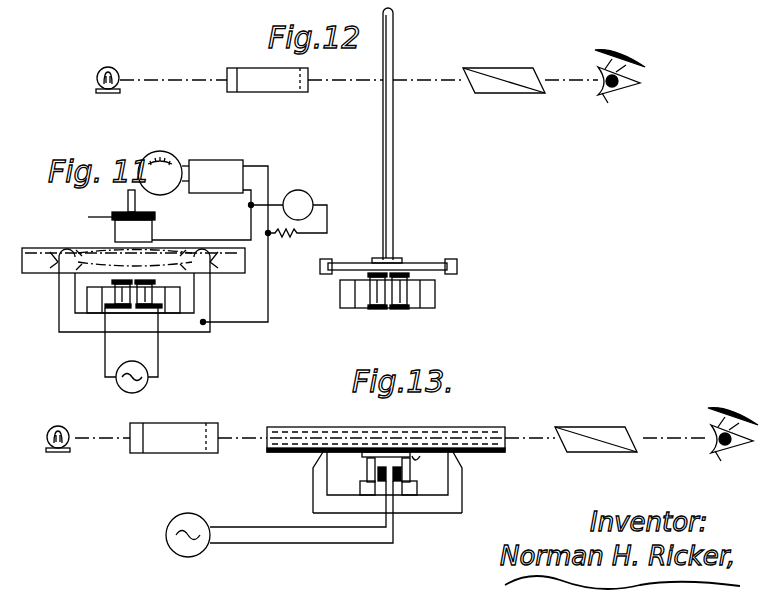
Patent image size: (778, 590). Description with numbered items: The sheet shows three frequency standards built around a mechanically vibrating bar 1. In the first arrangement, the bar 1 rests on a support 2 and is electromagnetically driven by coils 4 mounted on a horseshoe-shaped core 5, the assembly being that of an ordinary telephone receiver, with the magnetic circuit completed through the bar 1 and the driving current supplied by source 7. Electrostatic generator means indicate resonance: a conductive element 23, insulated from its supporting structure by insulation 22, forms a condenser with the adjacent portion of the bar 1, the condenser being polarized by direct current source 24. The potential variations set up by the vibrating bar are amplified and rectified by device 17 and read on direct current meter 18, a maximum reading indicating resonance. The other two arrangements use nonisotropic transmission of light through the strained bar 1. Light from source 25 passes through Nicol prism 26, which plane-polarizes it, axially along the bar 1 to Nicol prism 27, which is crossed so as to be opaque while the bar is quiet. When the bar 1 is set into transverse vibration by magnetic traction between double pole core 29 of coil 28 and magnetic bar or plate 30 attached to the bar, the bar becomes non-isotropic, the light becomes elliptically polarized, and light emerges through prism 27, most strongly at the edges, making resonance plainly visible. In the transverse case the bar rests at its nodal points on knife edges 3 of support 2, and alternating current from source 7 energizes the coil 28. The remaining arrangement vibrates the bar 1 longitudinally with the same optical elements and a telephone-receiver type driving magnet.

In FIG. 12, the bar 1 is at (395, 165).
In FIG. 11, the bar 1 is at (34, 248).
In FIG. 13, the bar 1 is at (340, 427).
In FIG. 11, the support 2 is at (198, 328).
In FIG. 13, the support 2 is at (425, 510).
In FIG. 13, the knife edges 3 is at (320, 462).
In FIG. 12, the coils 4 is at (402, 323).
In FIG. 11, the coils 4 is at (113, 312).
In FIG. 12, the horseshoe-shaped core 5 is at (430, 296).
In FIG. 11, the horseshoe-shaped core 5 is at (88, 302).
In FIG. 11, the source 7 is at (148, 380).
In FIG. 13, the source 7 is at (166, 532).
In FIG. 11, the amplifying and rectifying device 17 is at (216, 193).
In FIG. 11, the direct current meter 18 is at (166, 192).
In FIG. 11, the insulation 22 is at (95, 217).
In FIG. 11, the conductive element 23 is at (152, 232).
In FIG. 11, the direct current source 24 is at (308, 192).
In FIG. 12, the light source 25 is at (97, 75).
In FIG. 13, the light source 25 is at (47, 437).
In FIG. 12, the Nicol prism 26 is at (272, 92).
In FIG. 13, the Nicol prism 26 is at (175, 453).
In FIG. 12, the Nicol prism 27 is at (498, 92).
In FIG. 13, the Nicol prism 27 is at (576, 427).
In FIG. 13, the coil 28 is at (410, 476).
In FIG. 13, the double pole core 29 is at (367, 476).
In FIG. 12, the magnetic bar or plate 30 is at (425, 263).
In FIG. 13, the magnetic bar or plate 30 is at (425, 455).